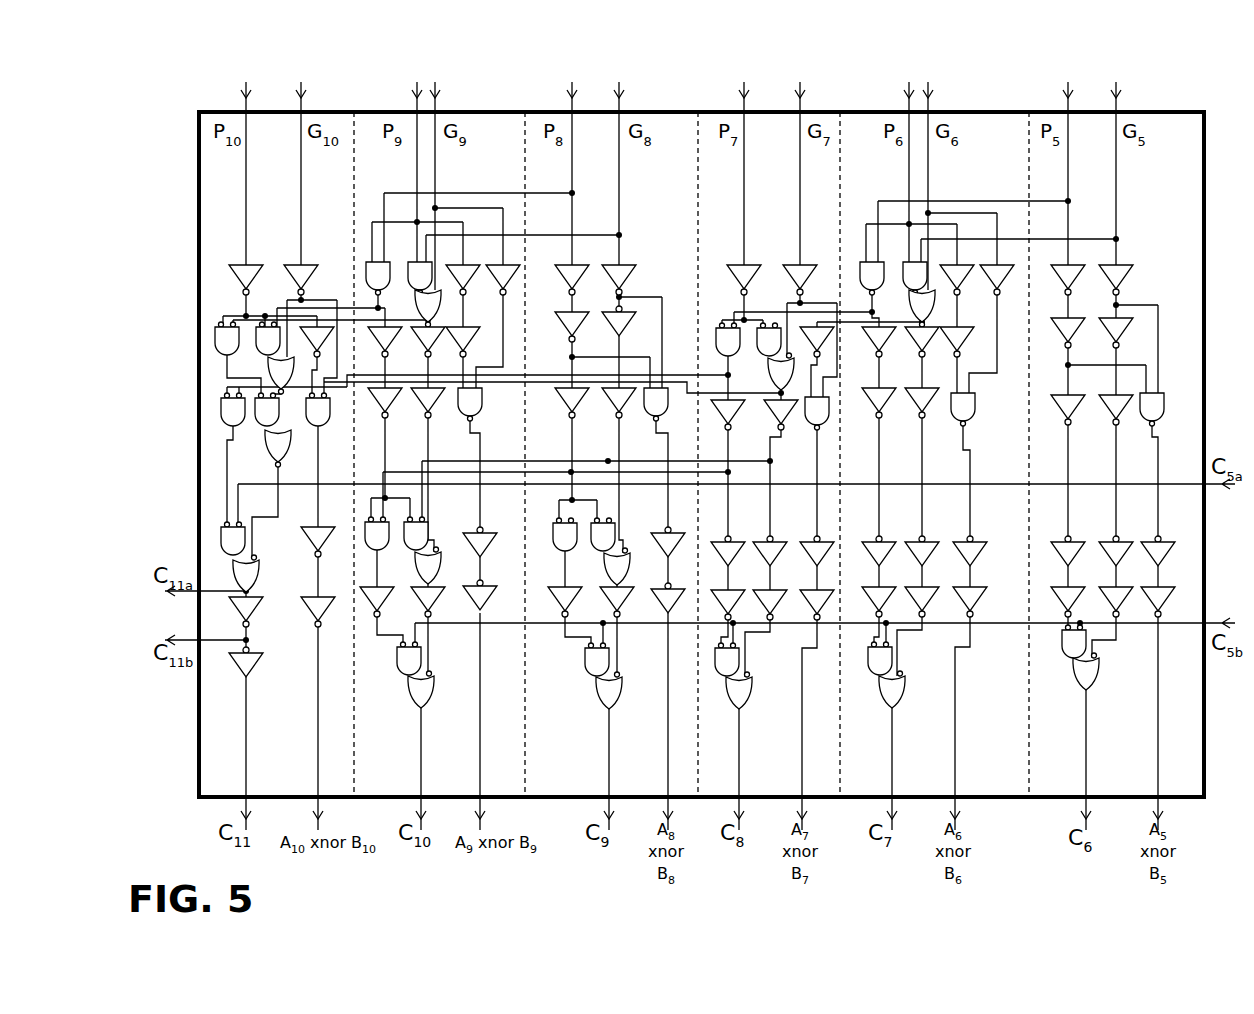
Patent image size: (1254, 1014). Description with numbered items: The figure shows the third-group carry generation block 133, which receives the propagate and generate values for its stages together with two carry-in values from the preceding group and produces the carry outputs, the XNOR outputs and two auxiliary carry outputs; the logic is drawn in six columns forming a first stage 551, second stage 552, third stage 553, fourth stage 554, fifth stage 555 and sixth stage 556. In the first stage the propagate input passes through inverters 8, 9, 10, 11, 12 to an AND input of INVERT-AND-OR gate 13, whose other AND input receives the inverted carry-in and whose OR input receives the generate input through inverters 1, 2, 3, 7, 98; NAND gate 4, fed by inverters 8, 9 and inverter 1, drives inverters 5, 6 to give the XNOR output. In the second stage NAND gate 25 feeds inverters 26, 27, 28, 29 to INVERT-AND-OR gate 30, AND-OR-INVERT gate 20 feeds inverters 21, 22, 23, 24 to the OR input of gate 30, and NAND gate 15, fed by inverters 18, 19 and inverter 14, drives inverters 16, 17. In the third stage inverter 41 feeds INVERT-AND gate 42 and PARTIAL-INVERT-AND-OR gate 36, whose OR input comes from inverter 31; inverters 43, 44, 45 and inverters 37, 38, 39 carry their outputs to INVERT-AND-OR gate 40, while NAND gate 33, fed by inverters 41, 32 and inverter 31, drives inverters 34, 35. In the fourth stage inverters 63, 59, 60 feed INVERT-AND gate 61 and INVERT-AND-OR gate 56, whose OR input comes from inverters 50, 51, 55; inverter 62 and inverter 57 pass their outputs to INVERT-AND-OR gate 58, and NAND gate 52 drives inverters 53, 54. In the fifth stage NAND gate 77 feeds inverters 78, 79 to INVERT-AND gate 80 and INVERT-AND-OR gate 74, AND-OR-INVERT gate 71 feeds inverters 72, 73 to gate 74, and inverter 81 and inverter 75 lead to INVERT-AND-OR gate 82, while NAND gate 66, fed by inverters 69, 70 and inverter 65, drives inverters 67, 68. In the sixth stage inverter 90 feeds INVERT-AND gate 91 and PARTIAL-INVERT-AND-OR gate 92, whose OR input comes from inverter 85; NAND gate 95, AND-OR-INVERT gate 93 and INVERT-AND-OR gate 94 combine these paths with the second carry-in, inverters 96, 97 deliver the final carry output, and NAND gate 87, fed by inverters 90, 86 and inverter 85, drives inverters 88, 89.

The inverter 1 is at (1116, 280).
The inverter 2 is at (1116, 333).
The inverter 3 is at (1116, 410).
The NAND gate 4 is at (1152, 409).
The inverter 5 is at (1158, 551).
The inverter 6 is at (1158, 602).
The inverter 7 is at (1116, 551).
The inverter 8 is at (1068, 280).
The inverter 9 is at (1068, 333).
The inverter 10 is at (1068, 410).
The inverter 11 is at (1068, 551).
The inverter 12 is at (1068, 602).
The INVERT-AND-OR gate 13 is at (1075, 657).
The inverter 14 is at (997, 280).
The NAND gate 15 is at (963, 409).
The inverter 16 is at (970, 551).
The inverter 17 is at (970, 602).
The inverter 18 is at (957, 280).
The inverter 19 is at (957, 342).
The AND-OR-INVERT gate 20 is at (913, 294).
The inverter 21 is at (922, 342).
The inverter 22 is at (922, 403).
The inverter 23 is at (922, 551).
The inverter 24 is at (922, 602).
The NAND gate 25 is at (872, 278).
The inverter 26 is at (879, 342).
The inverter 27 is at (879, 403).
The inverter 28 is at (879, 551).
The inverter 29 is at (879, 602).
The INVERT-AND-OR gate 30 is at (881, 675).
The inverter 31 is at (800, 280).
The inverter 32 is at (817, 342).
The NAND gate 33 is at (817, 413).
The inverter 34 is at (817, 551).
The inverter 35 is at (817, 605).
The PARTIAL-INVERT-AND-OR gate 36 is at (770, 356).
The inverter 37 is at (781, 415).
The inverter 38 is at (770, 551).
The inverter 39 is at (770, 605).
The INVERT-AND-OR gate 40 is at (728, 676).
The inverter 41 is at (744, 280).
The INVERT-AND gate 42 is at (728, 339).
The inverter 43 is at (728, 415).
The inverter 44 is at (728, 551).
The inverter 45 is at (728, 605).
The inverter 50 is at (619, 280).
The inverter 51 is at (619, 321).
The NAND gate 52 is at (656, 404).
The inverter 53 is at (668, 542).
The inverter 54 is at (668, 598).
The inverter 55 is at (619, 403).
The INVERT-AND-OR gate 56 is at (617, 551).
The inverter 57 is at (617, 602).
The INVERT-AND-OR gate 58 is at (598, 676).
The inverter 59 is at (572, 327).
The inverter 60 is at (572, 403).
The INVERT-AND gate 61 is at (565, 534).
The inverter 62 is at (565, 602).
The inverter 63 is at (572, 280).
The inverter 65 is at (503, 280).
The NAND gate 66 is at (470, 404).
The inverter 67 is at (480, 542).
The inverter 68 is at (480, 595).
The inverter 69 is at (463, 280).
The inverter 70 is at (463, 342).
The AND-OR-INVERT gate 71 is at (421, 294).
The inverter 72 is at (428, 342).
The inverter 73 is at (428, 403).
The INVERT-AND-OR gate 74 is at (420, 550).
The inverter 75 is at (428, 602).
The NAND gate 77 is at (378, 278).
The inverter 78 is at (385, 342).
The inverter 79 is at (385, 403).
The INVERT-AND gate 80 is at (377, 533).
The inverter 81 is at (377, 602).
The INVERT-AND-OR gate 82 is at (412, 675).
The inverter 85 is at (301, 280).
The inverter 86 is at (317, 342).
The NAND gate 87 is at (318, 409).
The inverter 88 is at (318, 542).
The inverter 89 is at (318, 612).
The inverter 90 is at (246, 280).
The INVERT-AND gate 91 is at (227, 338).
The PARTIAL-INVERT-AND-OR gate 92 is at (271, 358).
The AND-OR-INVERT gate 93 is at (269, 430).
The INVERT-AND-OR gate 94 is at (237, 557).
The NAND gate 95 is at (233, 409).
The inverter 96 is at (246, 612).
The inverter 97 is at (242, 665).
The inverter 98 is at (1116, 602).
The Group 3 Carry Generation Block 133 is at (372, 799).
The 1st stage of 3rd group 551 is at (1105, 62).
The 2nd stage of 3rd group 552 is at (935, 62).
The 3rd stage of 3rd group 553 is at (765, 62).
The 4th stage of 3rd group 554 is at (602, 62).
The 5th stage of 3rd group 555 is at (447, 62).
The 6th stage of 3rd group 556 is at (267, 65).